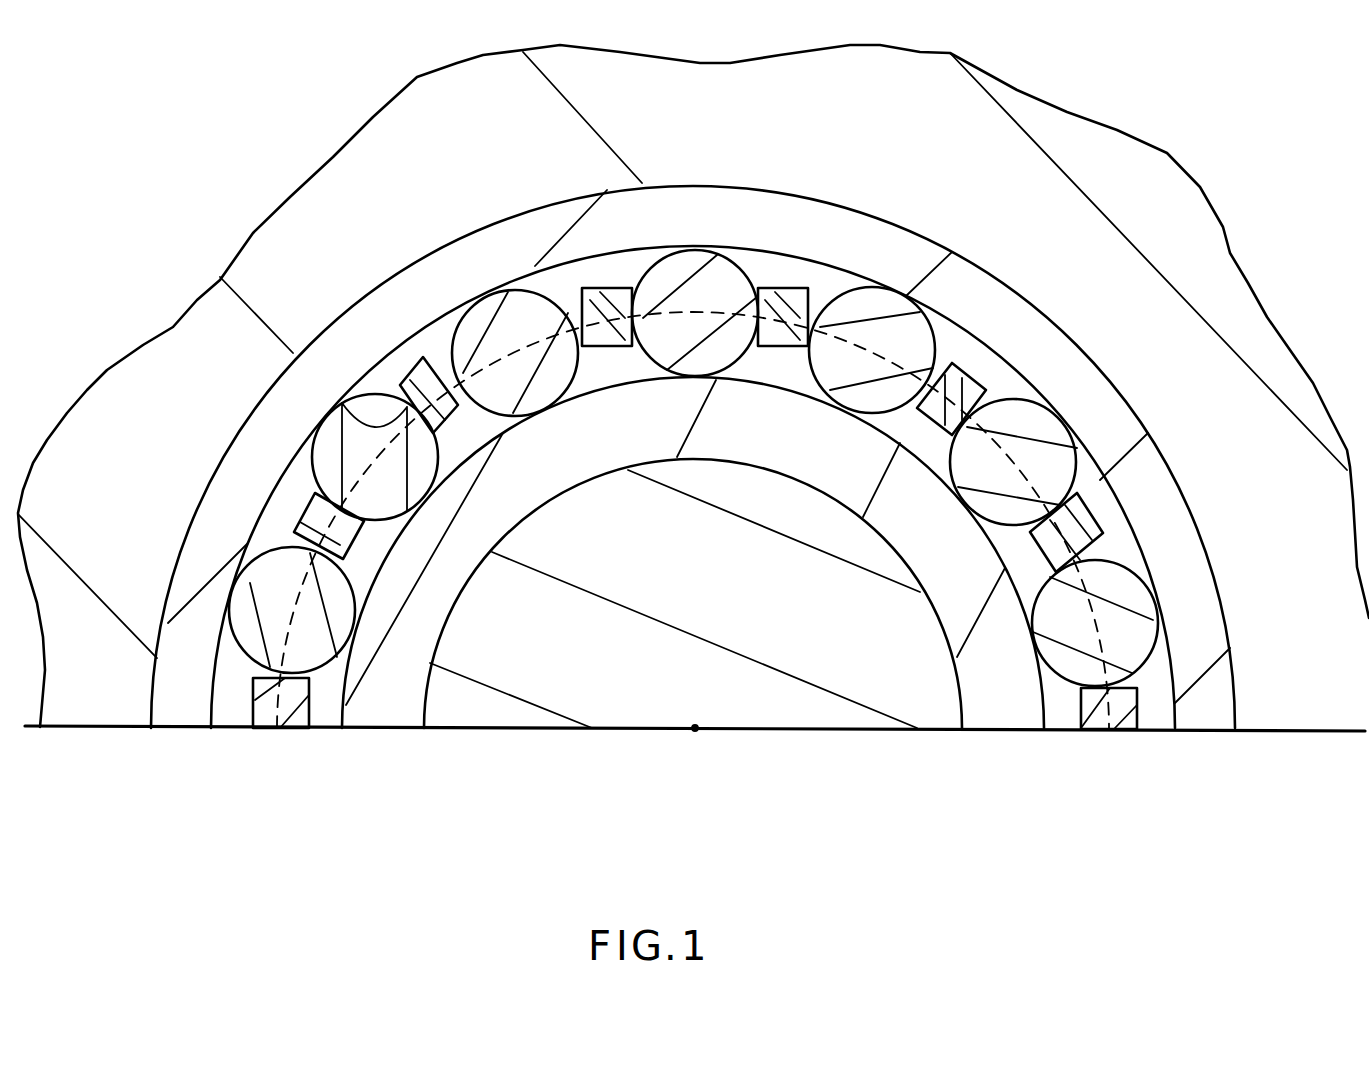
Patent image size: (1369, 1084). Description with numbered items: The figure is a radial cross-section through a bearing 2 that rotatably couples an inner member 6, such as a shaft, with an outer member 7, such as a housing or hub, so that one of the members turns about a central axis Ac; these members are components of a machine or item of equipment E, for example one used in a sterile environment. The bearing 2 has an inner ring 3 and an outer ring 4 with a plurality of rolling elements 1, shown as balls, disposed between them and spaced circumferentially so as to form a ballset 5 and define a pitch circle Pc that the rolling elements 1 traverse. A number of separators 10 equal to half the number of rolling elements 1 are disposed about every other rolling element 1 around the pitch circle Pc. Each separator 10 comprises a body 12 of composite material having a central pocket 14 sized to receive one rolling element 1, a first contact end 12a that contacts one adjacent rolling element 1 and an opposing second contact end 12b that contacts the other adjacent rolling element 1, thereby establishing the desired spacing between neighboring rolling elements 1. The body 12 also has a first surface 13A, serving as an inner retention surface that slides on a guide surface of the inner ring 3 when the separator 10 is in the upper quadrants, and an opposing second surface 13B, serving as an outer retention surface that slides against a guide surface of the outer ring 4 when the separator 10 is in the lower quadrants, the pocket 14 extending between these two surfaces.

The rolling elements 1 is at (477, 298).
The bearing 2 is at (872, 186).
The inner ring 3 is at (381, 712).
The outer ring 4 is at (1110, 388).
The ballset 5 is at (942, 325).
The inner member 6 is at (814, 716).
The outer member 7 is at (1128, 180).
The separator 10 is at (777, 286).
The body 12 is at (612, 353).
The first contact end 12a is at (578, 298).
The second contact end 12b is at (815, 305).
The first surface 13A is at (785, 350).
The second surface 13B is at (620, 290).
The central pocket 14 is at (338, 413).
The machine or item of equipment E is at (264, 90).
The pitch circle Pc is at (527, 290).
The central axis Ac is at (697, 726).